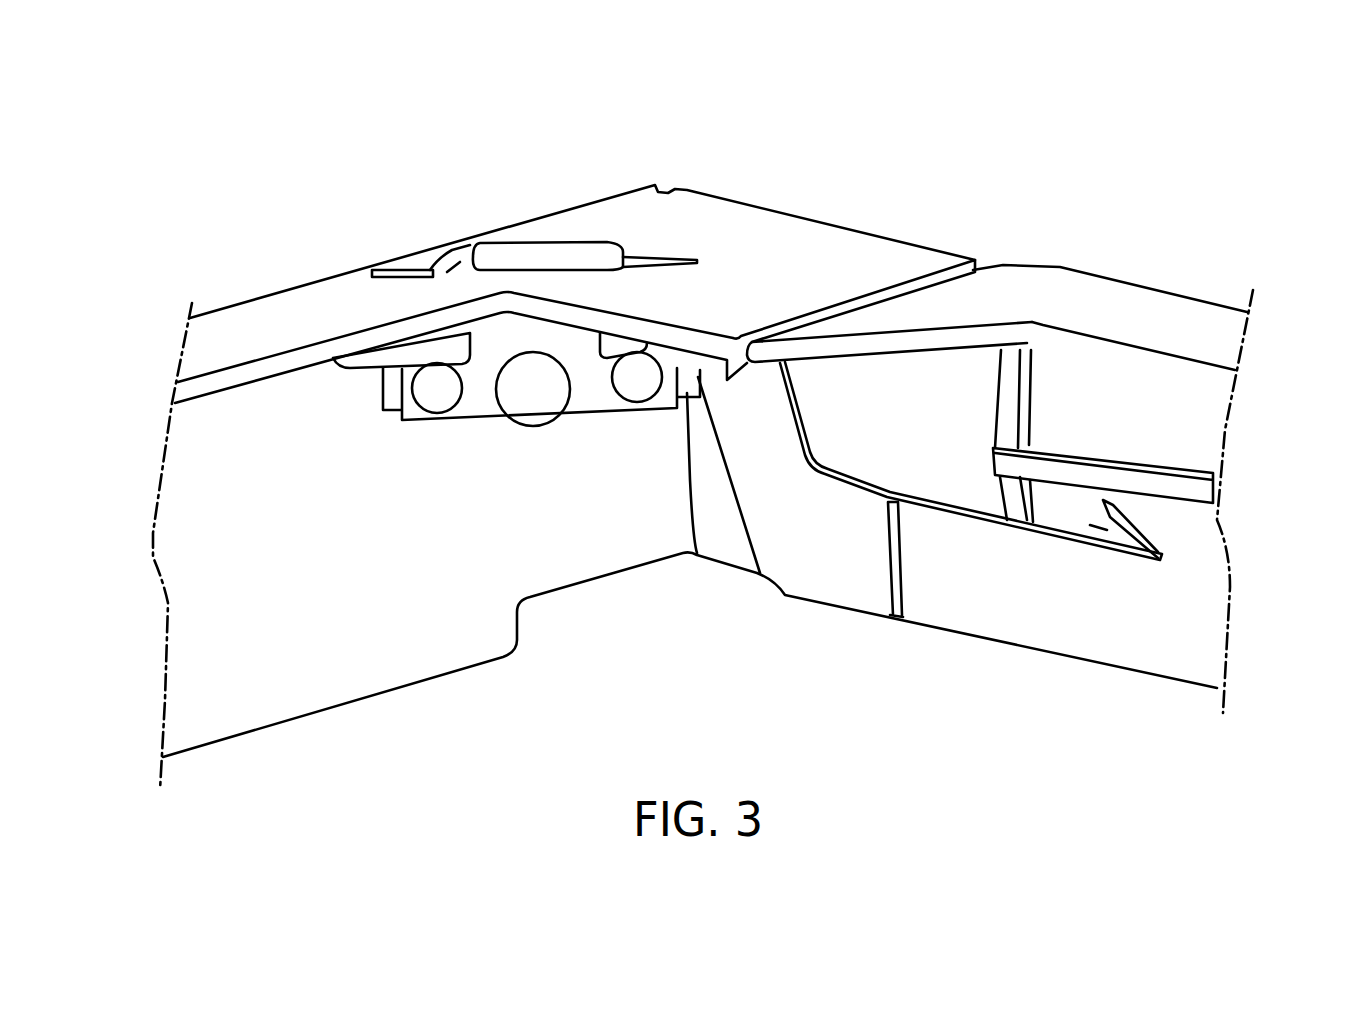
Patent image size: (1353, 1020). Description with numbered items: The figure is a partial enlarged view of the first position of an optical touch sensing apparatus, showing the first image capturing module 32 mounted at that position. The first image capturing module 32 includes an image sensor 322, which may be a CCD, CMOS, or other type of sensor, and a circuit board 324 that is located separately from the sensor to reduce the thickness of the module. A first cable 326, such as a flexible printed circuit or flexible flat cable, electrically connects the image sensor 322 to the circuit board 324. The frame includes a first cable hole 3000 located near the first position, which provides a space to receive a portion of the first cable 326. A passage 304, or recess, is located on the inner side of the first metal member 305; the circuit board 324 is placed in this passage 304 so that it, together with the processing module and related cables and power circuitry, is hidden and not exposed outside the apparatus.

The first image capturing module 32 is at (563, 672).
The passage 304 is at (1165, 549).
The first metal member 305 is at (1224, 273).
The image sensor 322 is at (472, 419).
The circuit board 324 is at (1138, 378).
The first cable 326 is at (538, 252).
The first cable hole 3000 is at (470, 268).